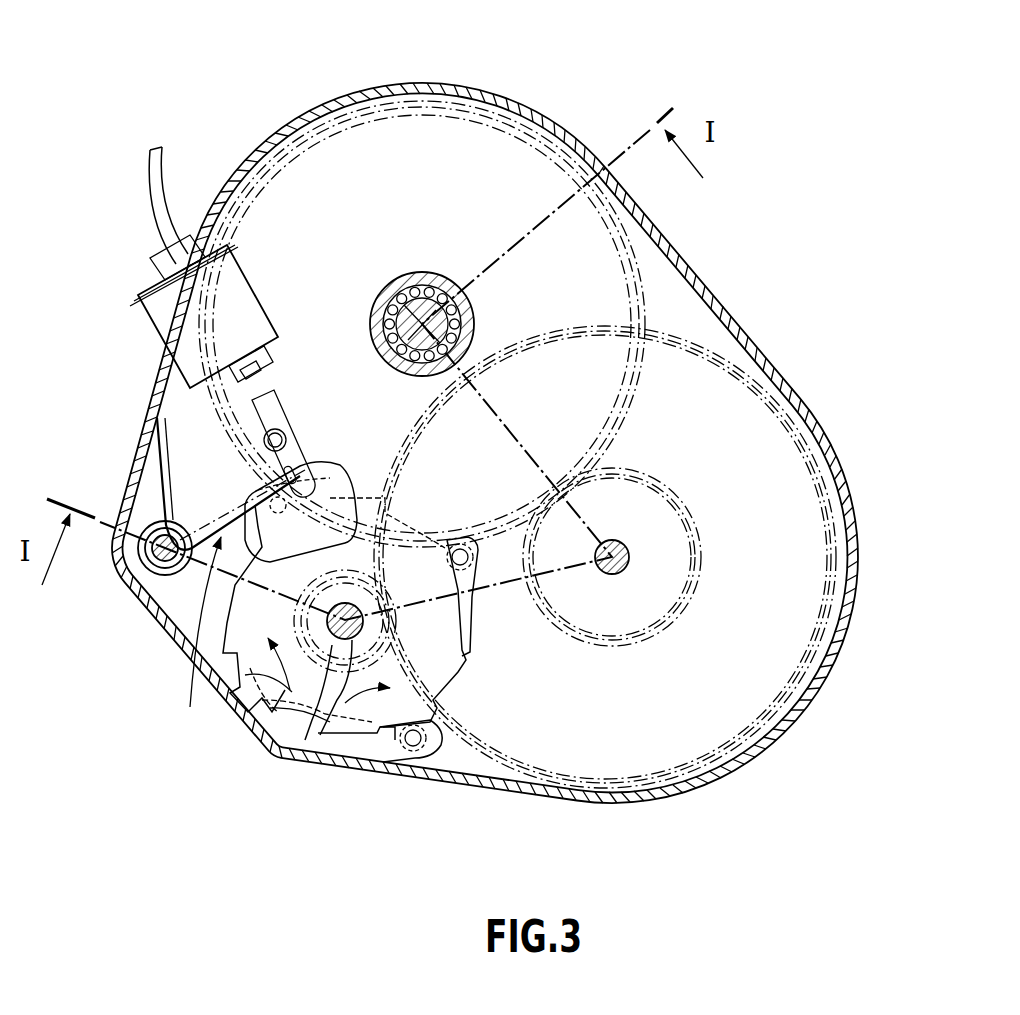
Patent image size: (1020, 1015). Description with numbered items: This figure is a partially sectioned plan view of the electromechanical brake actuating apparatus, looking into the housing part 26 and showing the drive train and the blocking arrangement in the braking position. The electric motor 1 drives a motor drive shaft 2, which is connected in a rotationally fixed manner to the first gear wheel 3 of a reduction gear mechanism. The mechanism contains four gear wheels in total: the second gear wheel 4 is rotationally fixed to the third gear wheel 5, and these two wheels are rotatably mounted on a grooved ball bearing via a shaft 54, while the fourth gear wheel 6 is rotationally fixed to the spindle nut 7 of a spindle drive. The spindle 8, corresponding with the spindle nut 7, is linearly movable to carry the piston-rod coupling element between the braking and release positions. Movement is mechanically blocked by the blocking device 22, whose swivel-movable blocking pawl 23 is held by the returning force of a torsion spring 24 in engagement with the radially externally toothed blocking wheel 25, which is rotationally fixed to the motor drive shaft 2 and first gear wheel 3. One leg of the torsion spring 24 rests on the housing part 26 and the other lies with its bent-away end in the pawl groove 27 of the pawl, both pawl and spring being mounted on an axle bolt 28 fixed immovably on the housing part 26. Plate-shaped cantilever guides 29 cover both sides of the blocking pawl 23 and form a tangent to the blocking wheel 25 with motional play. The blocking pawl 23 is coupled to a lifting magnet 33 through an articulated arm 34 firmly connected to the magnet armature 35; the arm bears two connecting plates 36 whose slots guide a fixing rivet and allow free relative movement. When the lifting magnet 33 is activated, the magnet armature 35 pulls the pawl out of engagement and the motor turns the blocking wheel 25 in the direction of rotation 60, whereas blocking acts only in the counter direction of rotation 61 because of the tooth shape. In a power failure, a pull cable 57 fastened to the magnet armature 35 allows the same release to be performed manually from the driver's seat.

The electric motor 1 is at (399, 756).
The motor drive shaft 2 is at (322, 692).
The first gear wheel 3 is at (332, 648).
The second gear wheel 4 is at (715, 722).
The third gear wheel 5 is at (645, 598).
The fourth gear wheel 6 is at (465, 165).
The spindle nut 7 is at (421, 281).
The spindle 8 is at (384, 303).
The blocking device 22 is at (378, 481).
The blocking pawl 23 is at (222, 592).
The torsion spring 24 is at (152, 481).
The blocking wheel 25 is at (292, 694).
The housing part 26 is at (702, 269).
The pawl groove 27 is at (231, 486).
The axle bolt 28 is at (125, 580).
The cantilever guide 29 is at (327, 483).
The lifting magnet 33 is at (154, 313).
The articulated arm 34 is at (267, 418).
The magnet armature 35 is at (257, 385).
The connecting plates 36 is at (287, 456).
The shaft 54 is at (620, 552).
The pull cable 57 is at (160, 190).
The direction of rotation 60 is at (250, 669).
The counter direction of rotation 61 is at (363, 705).